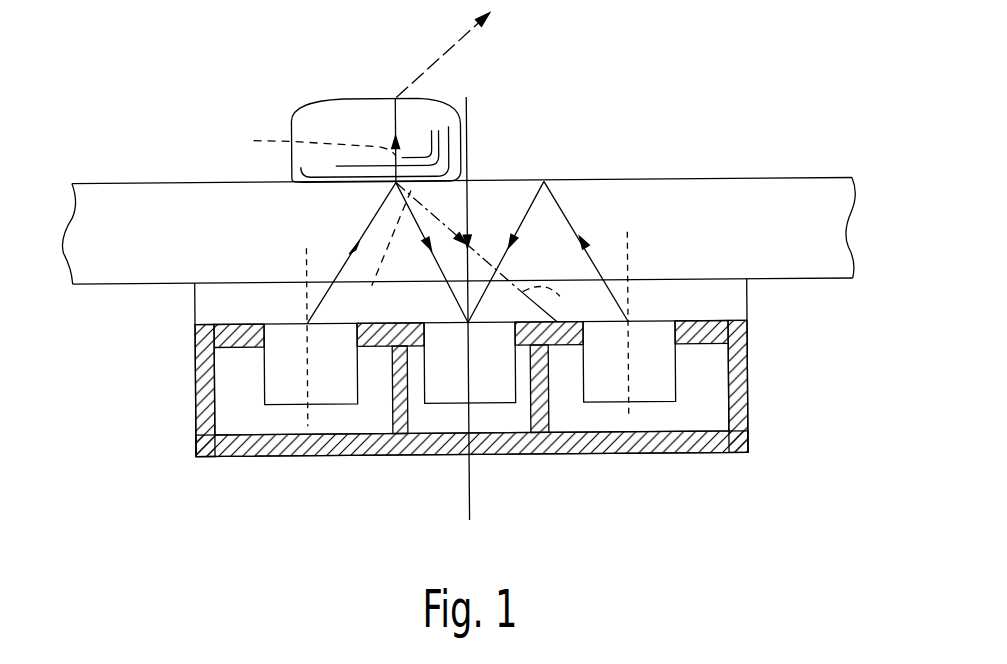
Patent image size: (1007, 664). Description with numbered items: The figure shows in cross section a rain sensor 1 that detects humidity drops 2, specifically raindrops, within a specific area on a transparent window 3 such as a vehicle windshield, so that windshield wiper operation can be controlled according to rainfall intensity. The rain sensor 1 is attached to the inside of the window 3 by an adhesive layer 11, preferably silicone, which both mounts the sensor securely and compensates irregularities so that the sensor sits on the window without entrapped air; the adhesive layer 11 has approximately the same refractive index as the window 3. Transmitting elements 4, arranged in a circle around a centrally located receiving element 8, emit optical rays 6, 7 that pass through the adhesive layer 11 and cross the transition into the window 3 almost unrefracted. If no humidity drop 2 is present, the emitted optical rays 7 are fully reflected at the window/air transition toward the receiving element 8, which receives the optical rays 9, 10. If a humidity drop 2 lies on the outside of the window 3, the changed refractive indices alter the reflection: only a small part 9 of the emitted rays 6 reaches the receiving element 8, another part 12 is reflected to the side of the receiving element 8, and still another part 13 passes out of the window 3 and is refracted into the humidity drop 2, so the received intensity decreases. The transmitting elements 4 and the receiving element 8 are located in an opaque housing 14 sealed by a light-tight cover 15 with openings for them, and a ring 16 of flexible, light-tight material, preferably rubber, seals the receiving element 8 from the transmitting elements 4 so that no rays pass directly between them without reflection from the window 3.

The rain sensor 1 is at (456, 420).
The humidity drop 2 is at (362, 123).
The transparent window 3 is at (727, 205).
The transmitting element 4 is at (285, 388).
The optical ray 6 is at (372, 225).
The optical ray 7 is at (570, 222).
The receiving element 8 is at (488, 382).
The optical ray 9 is at (384, 254).
The optical ray 10 is at (535, 203).
The adhesive layer 11 is at (732, 298).
The part of emitted rays 12 is at (560, 297).
The part of emitted rays 13 is at (310, 140).
The opaque housing 14 is at (200, 413).
The light-tight cover 15 is at (202, 337).
The ring 16 is at (403, 403).